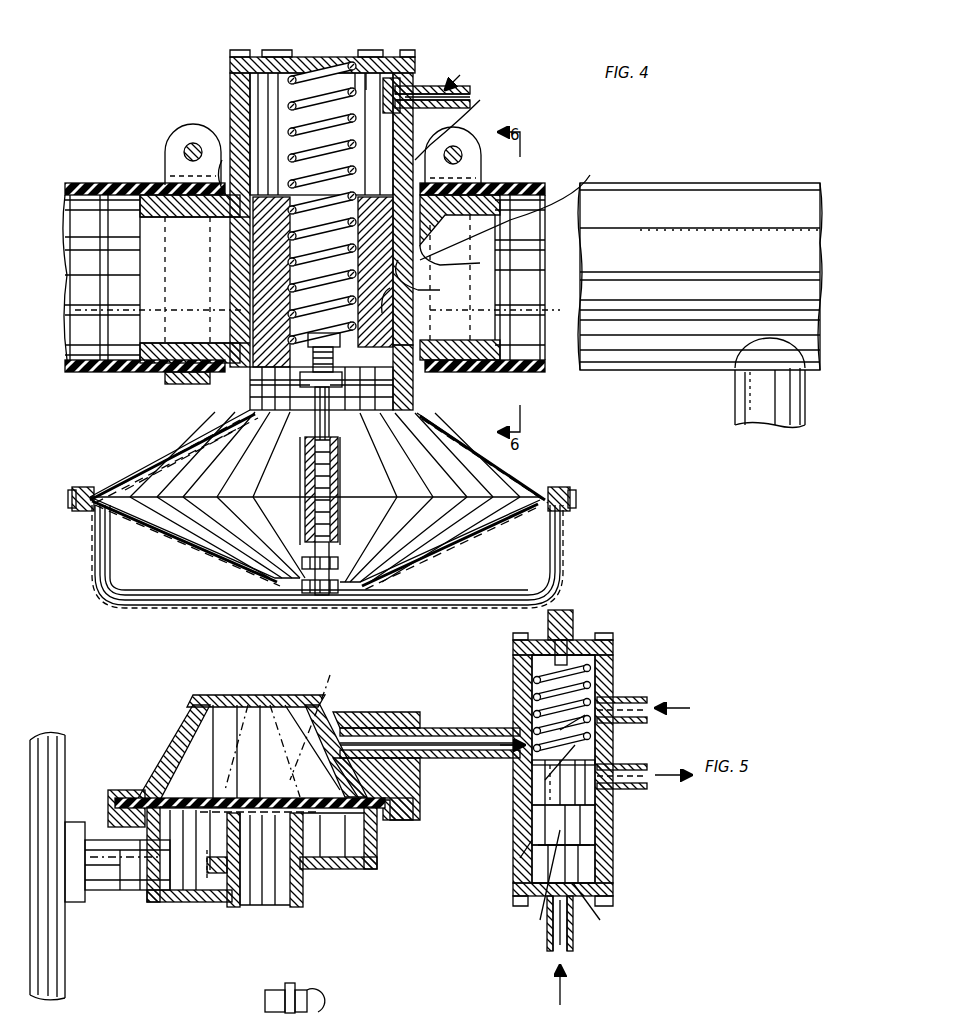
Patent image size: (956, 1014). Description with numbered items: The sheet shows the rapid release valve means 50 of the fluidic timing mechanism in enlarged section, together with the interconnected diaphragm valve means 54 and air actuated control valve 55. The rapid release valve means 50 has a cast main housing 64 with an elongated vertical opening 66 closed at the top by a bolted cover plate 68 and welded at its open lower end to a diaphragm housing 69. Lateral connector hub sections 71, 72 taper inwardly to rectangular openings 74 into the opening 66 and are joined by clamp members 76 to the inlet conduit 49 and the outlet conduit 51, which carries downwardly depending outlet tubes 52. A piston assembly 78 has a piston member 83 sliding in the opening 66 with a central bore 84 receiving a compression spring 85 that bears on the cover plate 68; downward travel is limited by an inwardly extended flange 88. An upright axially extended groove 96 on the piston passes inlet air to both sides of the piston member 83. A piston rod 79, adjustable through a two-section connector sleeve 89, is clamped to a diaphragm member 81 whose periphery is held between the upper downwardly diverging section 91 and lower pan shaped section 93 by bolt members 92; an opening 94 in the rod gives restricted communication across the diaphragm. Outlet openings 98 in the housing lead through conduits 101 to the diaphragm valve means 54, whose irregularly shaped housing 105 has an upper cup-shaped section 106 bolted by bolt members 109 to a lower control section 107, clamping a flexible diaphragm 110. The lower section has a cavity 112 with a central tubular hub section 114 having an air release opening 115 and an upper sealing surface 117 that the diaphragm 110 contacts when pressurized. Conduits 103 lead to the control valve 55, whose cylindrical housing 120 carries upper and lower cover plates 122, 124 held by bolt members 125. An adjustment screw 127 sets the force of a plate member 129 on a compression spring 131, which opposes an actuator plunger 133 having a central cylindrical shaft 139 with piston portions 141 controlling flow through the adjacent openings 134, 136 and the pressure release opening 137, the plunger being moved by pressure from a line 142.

In FIG. 4, the inlet conduit 49 is at (95, 372).
In FIG. 4, the rapid release valve means 50 is at (470, 88).
In FIG. 5, the rapid release valve means 50 is at (72, 752).
In FIG. 4, the outlet conduit 51 is at (545, 188).
In FIG. 4, the outlet tubes 52 is at (746, 406).
In FIG. 5, the diaphragm valve means 54 is at (257, 695).
In FIG. 5, the air actuated control valve 55 is at (620, 652).
In FIG. 4, the cast main housing 64 is at (232, 90).
In FIG. 4, the elongated enlarged vertical opening 66 is at (408, 75).
In FIG. 4, the bolted cover plate 68 is at (290, 70).
In FIG. 4, the diaphragm housing 69 is at (500, 470).
In FIG. 4, the connector hub section 71 is at (160, 372).
In FIG. 4, the connector hub section 72 is at (520, 340).
In FIG. 4, the rectangular openings 74 is at (200, 285).
In FIG. 4, the clamp members 76 is at (168, 161).
In FIG. 5, the clamp members 76 is at (320, 1010).
In FIG. 4, the piston assembly 78 is at (464, 120).
In FIG. 4, the piston rod 79 is at (300, 402).
In FIG. 4, the diaphragm member 81 is at (473, 530).
In FIG. 4, the piston member 83 is at (420, 288).
In FIG. 4, the central bore 84 is at (395, 305).
In FIG. 4, the compression spring 85 is at (360, 72).
In FIG. 4, the inwardly extended flange 88 is at (310, 390).
In FIG. 4, the connector sleeve 89 is at (331, 465).
In FIG. 4, the upper downwardly diverging section 91 is at (143, 470).
In FIG. 4, the bolt members 92 is at (563, 487).
In FIG. 4, the lower pan shaped section 93 is at (183, 606).
In FIG. 4, the opening 94 is at (338, 600).
In FIG. 4, the upright axially extended groove 96 is at (225, 150).
In FIG. 4, the outlet openings 98 is at (405, 92).
In FIG. 4, the conduits 101 is at (445, 90).
In FIG. 5, the conduits 101 is at (108, 875).
In FIG. 5, the conduits 103 is at (478, 760).
In FIG. 5, the irregularly shaped housing 105 is at (370, 720).
In FIG. 5, the upper cup-shaped section 106 is at (160, 768).
In FIG. 5, the lower control section 107 is at (337, 870).
In FIG. 5, the bolt members 109 is at (108, 810).
In FIG. 5, the flexible diaphragm 110 is at (212, 795).
In FIG. 5, the cavity 112 is at (185, 895).
In FIG. 5, the central tubular hub section 114 is at (300, 905).
In FIG. 5, the central air release opening 115 is at (275, 905).
In FIG. 5, the upper sealing surface 117 is at (218, 875).
In FIG. 5, the cylindrical housing 120 is at (605, 742).
In FIG. 5, the upper cover plate 122 is at (570, 650).
In FIG. 5, the lower cover plate 124 is at (590, 918).
In FIG. 5, the bolt members 125 is at (525, 642).
In FIG. 5, the adjustment screw 127 is at (563, 607).
In FIG. 5, the plate member 129 is at (600, 640).
In FIG. 5, the compression spring 131 is at (515, 712).
In FIG. 5, the actuator plunger 133 is at (580, 830).
In FIG. 5, the opening 134 is at (615, 700).
In FIG. 5, the opening 136 is at (612, 789).
In FIG. 5, the additional opening 137 is at (515, 832).
In FIG. 5, the central cylindrical shaft 139 is at (530, 845).
In FIG. 5, the piston portions 141 is at (605, 770).
In FIG. 5, the line 142 is at (575, 945).